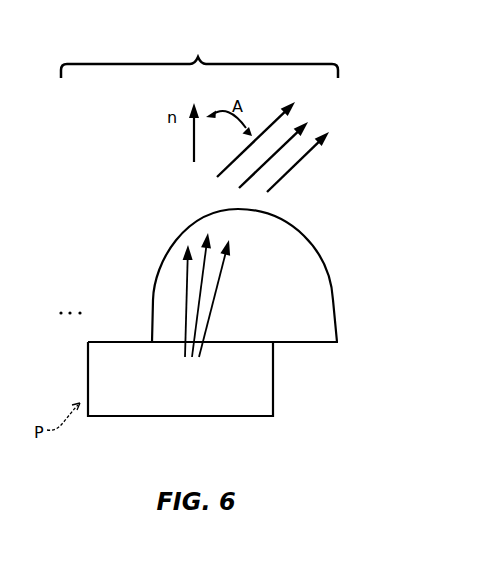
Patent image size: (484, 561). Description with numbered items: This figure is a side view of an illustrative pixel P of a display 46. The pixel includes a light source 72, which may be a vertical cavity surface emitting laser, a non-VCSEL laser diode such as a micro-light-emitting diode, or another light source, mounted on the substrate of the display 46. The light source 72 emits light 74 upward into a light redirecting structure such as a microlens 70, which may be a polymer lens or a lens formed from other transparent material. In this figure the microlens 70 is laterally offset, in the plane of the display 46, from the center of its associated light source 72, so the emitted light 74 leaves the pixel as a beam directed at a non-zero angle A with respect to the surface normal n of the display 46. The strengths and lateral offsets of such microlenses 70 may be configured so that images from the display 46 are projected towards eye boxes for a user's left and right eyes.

The display 46 is at (199, 55).
The microlens 70 is at (325, 295).
The light source 72 is at (267, 382).
The emitted light 74 is at (290, 169).